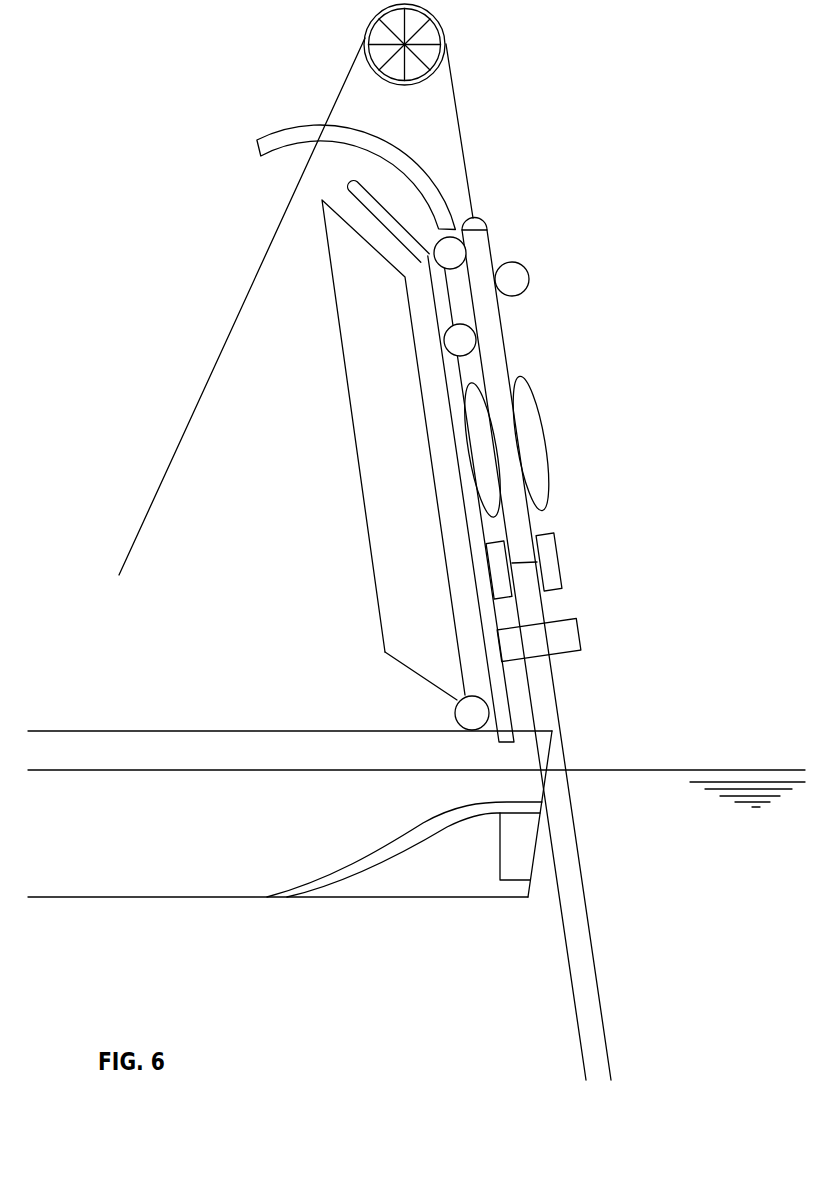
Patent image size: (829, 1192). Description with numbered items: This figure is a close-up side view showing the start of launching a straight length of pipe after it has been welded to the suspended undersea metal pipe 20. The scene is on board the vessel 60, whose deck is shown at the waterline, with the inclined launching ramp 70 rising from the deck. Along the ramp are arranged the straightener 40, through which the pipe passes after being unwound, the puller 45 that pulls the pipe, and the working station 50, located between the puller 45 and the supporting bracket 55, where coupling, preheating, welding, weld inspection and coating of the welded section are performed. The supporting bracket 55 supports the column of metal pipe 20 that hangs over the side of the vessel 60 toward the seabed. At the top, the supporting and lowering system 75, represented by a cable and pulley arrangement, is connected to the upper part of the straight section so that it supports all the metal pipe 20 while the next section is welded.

The undersea metal pipe 20 is at (602, 1003).
The straightener 40 is at (529, 280).
The puller 45 is at (543, 442).
The working station 50 is at (562, 562).
The supporting bracket 55 is at (580, 635).
The vessel 60 is at (78, 731).
The launching ramp 70 is at (368, 543).
The supporting and lowering system 75 is at (460, 122).